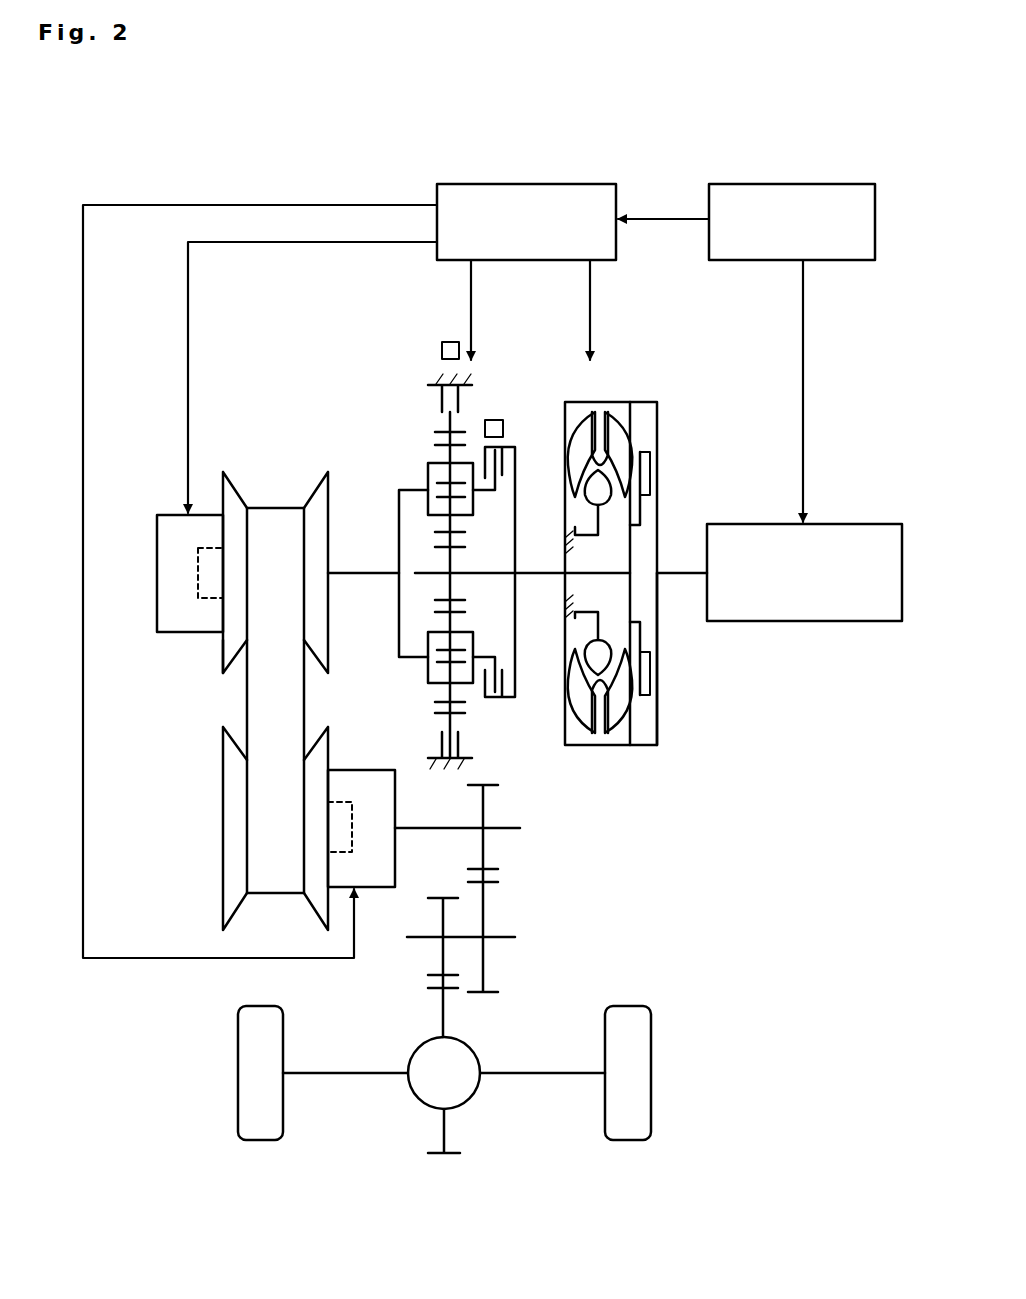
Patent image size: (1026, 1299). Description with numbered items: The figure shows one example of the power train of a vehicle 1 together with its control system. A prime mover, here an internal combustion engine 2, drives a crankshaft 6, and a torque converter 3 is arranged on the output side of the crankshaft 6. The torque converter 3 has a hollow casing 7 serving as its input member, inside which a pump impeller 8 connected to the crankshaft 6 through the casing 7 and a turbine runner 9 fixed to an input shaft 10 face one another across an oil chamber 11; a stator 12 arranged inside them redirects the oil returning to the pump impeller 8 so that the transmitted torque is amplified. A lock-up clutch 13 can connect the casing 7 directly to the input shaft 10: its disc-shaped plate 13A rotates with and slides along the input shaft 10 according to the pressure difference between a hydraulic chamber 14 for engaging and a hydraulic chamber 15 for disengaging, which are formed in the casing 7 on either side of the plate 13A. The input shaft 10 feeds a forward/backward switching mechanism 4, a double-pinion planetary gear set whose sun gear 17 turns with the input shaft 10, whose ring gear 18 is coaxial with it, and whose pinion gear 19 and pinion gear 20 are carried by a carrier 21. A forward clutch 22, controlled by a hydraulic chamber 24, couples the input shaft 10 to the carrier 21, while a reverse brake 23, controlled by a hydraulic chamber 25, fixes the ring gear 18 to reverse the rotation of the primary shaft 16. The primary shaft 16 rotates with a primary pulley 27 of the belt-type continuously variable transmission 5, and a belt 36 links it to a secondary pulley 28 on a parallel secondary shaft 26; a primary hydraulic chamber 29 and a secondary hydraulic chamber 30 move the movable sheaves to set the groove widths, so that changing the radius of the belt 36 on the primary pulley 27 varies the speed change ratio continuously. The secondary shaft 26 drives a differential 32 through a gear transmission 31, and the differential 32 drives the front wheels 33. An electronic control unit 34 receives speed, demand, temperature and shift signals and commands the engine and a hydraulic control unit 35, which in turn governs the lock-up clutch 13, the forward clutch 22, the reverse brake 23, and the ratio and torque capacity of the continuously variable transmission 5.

The vehicle 1 is at (722, 795).
The prime mover (engine) 2 is at (852, 524).
The torque converter 3 is at (635, 540).
The forward/backward switching mechanism 4 is at (480, 563).
The belt-type continuously variable transmission 5 is at (243, 494).
The crankshaft 6 is at (683, 573).
The casing 7 is at (652, 406).
The pump impeller 8 is at (580, 415).
The turbine runner 9 is at (615, 420).
The input shaft 10 is at (470, 573).
The oil chamber 11 is at (607, 472).
The stator 12 is at (597, 497).
The lock-up clutch 13 is at (650, 475).
The plate 13A is at (645, 525).
The hydraulic chamber for engaging the lock-up clutch 14 is at (644, 690).
The hydraulic chamber for disengaging the lock-up clutch 15 is at (650, 660).
The primary shaft 16 is at (372, 573).
The sun gear 17 is at (452, 586).
The ring gear 18 is at (440, 716).
The pinion gear 19 is at (452, 528).
The pinion gear 20 is at (445, 448).
The carrier 21 is at (428, 490).
The forward clutch 22 is at (505, 710).
The reverse brake 23 is at (436, 398).
The hydraulic chamber 24 is at (492, 420).
The hydraulic chamber 25 is at (446, 342).
The secondary shaft 26 is at (450, 828).
The primary pulley 27 is at (228, 650).
The secondary pulley 28 is at (235, 828).
The primary hydraulic chamber 29 is at (198, 570).
The secondary hydraulic chamber 30 is at (352, 835).
The gear transmission 31 is at (520, 905).
The differential 32 is at (472, 1092).
The wheels 33 is at (648, 1048).
The electronic control unit 34 is at (803, 184).
The hydraulic control unit 35 is at (520, 184).
The belt 36 is at (247, 690).